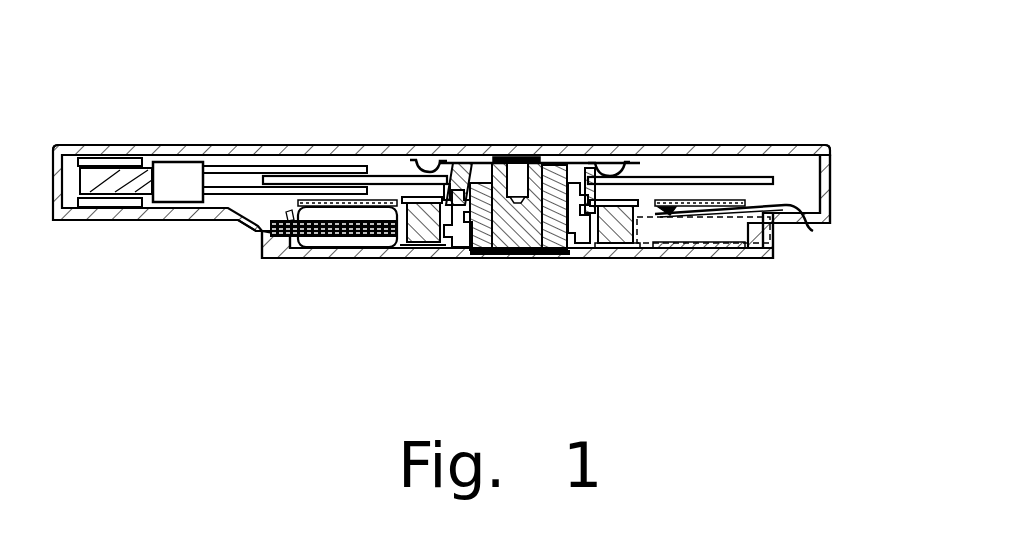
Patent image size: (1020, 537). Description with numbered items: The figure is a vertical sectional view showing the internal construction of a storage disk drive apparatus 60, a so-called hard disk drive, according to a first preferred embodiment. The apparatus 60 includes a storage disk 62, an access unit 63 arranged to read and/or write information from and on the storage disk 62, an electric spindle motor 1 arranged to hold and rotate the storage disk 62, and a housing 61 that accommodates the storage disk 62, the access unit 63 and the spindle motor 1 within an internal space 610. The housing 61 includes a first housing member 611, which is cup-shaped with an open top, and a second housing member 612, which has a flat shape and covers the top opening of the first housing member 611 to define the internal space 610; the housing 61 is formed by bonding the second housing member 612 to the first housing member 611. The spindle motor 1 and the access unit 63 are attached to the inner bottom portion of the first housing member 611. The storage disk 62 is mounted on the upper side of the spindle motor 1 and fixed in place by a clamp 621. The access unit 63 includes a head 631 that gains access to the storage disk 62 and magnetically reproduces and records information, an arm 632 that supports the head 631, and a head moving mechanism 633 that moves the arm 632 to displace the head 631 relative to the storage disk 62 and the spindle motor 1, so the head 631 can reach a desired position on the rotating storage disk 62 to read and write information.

The storage disk drive apparatus 60 is at (92, 98).
The housing 61 is at (845, 322).
The internal space 610 is at (797, 180).
The first housing member 611 is at (762, 259).
The second housing member 612 is at (832, 150).
The storage disk 62 is at (727, 176).
The clamp 621 is at (623, 148).
The access unit 63 is at (164, 316).
The head 631 is at (379, 167).
The arm 632 is at (263, 147).
The head moving mechanism 633 is at (177, 183).
The electric spindle motor 1 is at (530, 227).